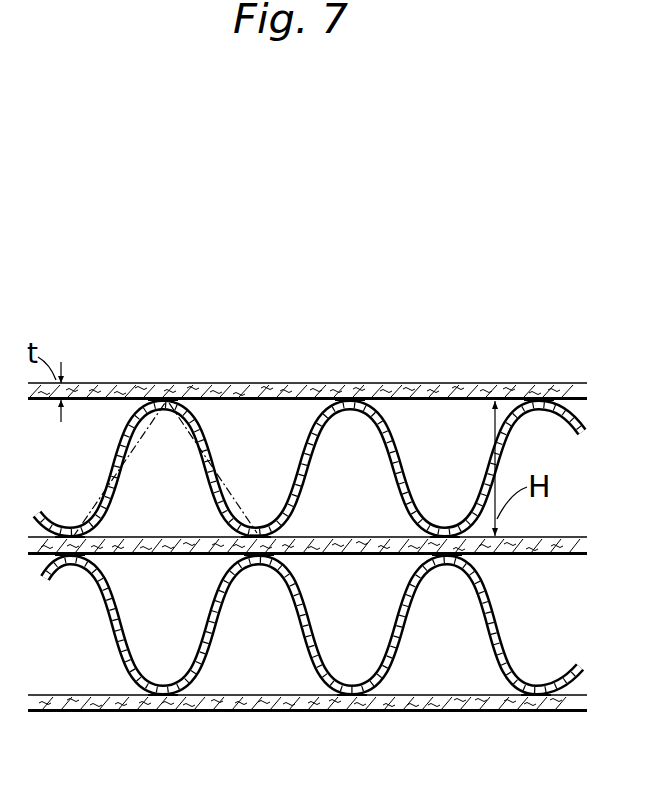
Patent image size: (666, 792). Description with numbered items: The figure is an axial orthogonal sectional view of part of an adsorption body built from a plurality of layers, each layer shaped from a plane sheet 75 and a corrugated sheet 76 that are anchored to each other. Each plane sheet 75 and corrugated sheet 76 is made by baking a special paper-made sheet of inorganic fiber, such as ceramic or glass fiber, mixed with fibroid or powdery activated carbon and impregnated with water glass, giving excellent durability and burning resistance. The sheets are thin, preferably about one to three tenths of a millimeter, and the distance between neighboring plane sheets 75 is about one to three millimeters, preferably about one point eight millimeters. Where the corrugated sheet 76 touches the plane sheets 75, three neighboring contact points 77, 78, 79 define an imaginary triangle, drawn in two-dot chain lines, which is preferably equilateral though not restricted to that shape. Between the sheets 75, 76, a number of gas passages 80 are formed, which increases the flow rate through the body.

The plane sheet 75 is at (267, 394).
The corrugated sheet 76 is at (403, 461).
The contact point 77 is at (78, 531).
The contact point 78 is at (163, 404).
The contact point 79 is at (257, 533).
The gas passage 80 is at (428, 418).